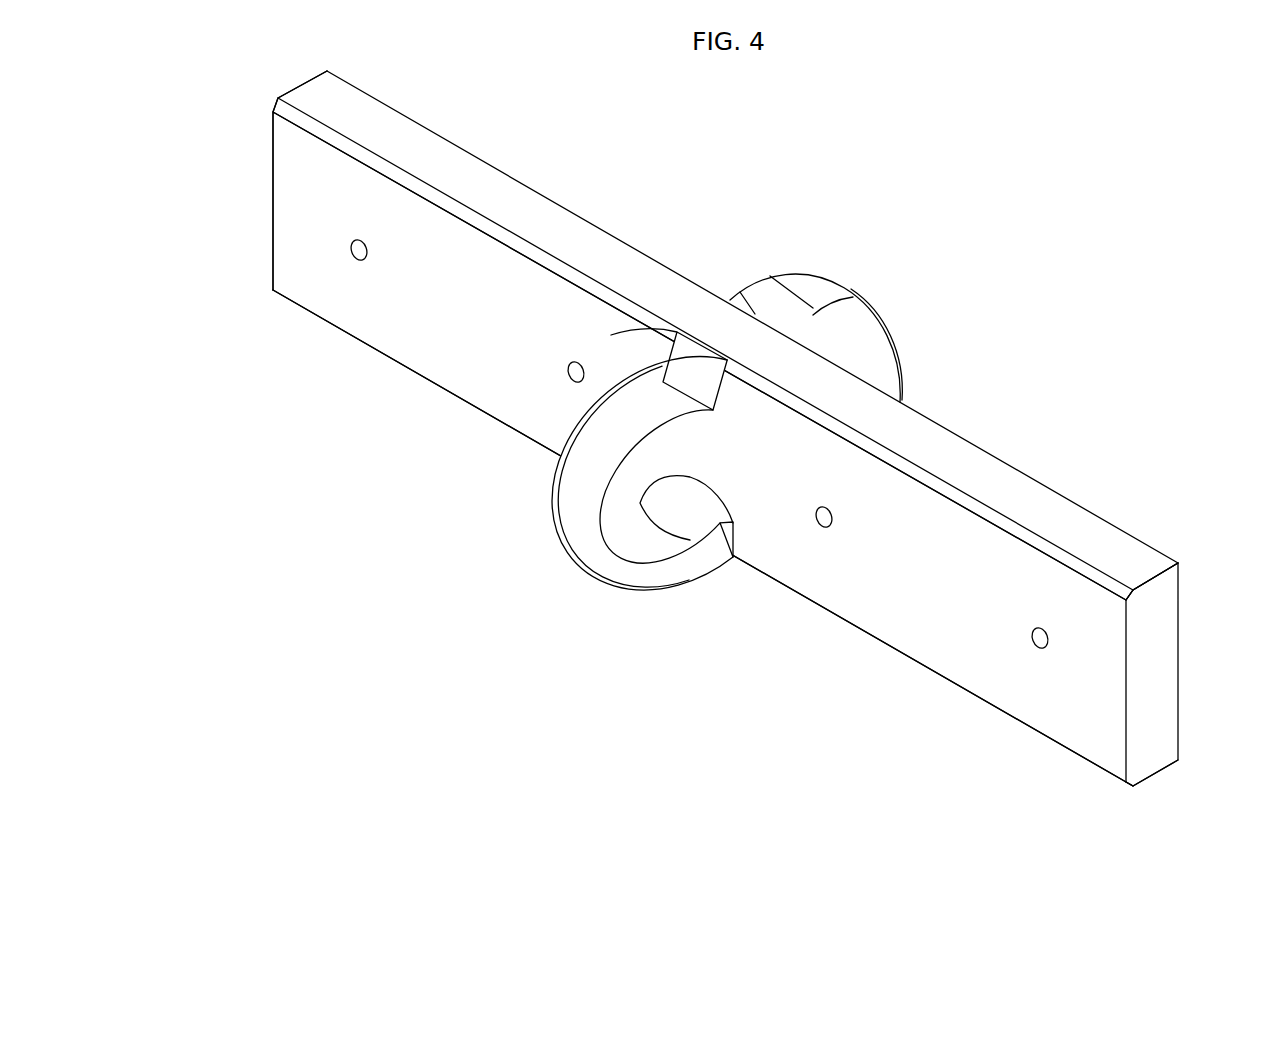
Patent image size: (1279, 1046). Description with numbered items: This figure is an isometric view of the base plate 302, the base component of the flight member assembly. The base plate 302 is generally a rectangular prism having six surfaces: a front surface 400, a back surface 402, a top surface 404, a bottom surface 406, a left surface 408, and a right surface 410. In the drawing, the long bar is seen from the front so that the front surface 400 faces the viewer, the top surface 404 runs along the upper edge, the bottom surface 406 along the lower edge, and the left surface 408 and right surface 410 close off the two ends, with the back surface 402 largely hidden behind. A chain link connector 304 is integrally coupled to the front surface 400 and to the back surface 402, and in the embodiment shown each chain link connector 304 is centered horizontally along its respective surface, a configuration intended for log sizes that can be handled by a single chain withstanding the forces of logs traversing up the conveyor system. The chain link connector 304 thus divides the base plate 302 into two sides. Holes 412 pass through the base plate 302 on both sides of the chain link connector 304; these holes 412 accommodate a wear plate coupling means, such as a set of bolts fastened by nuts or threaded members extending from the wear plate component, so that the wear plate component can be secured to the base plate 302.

The base plate 302 is at (719, 463).
The chain link connector 304 is at (885, 245).
The front surface 400 is at (346, 388).
The back surface 402 is at (1182, 571).
The top surface 404 is at (1037, 464).
The bottom surface 406 is at (1166, 780).
The left surface 408 is at (252, 177).
The right surface 410 is at (1169, 675).
The holes 412 is at (299, 339).